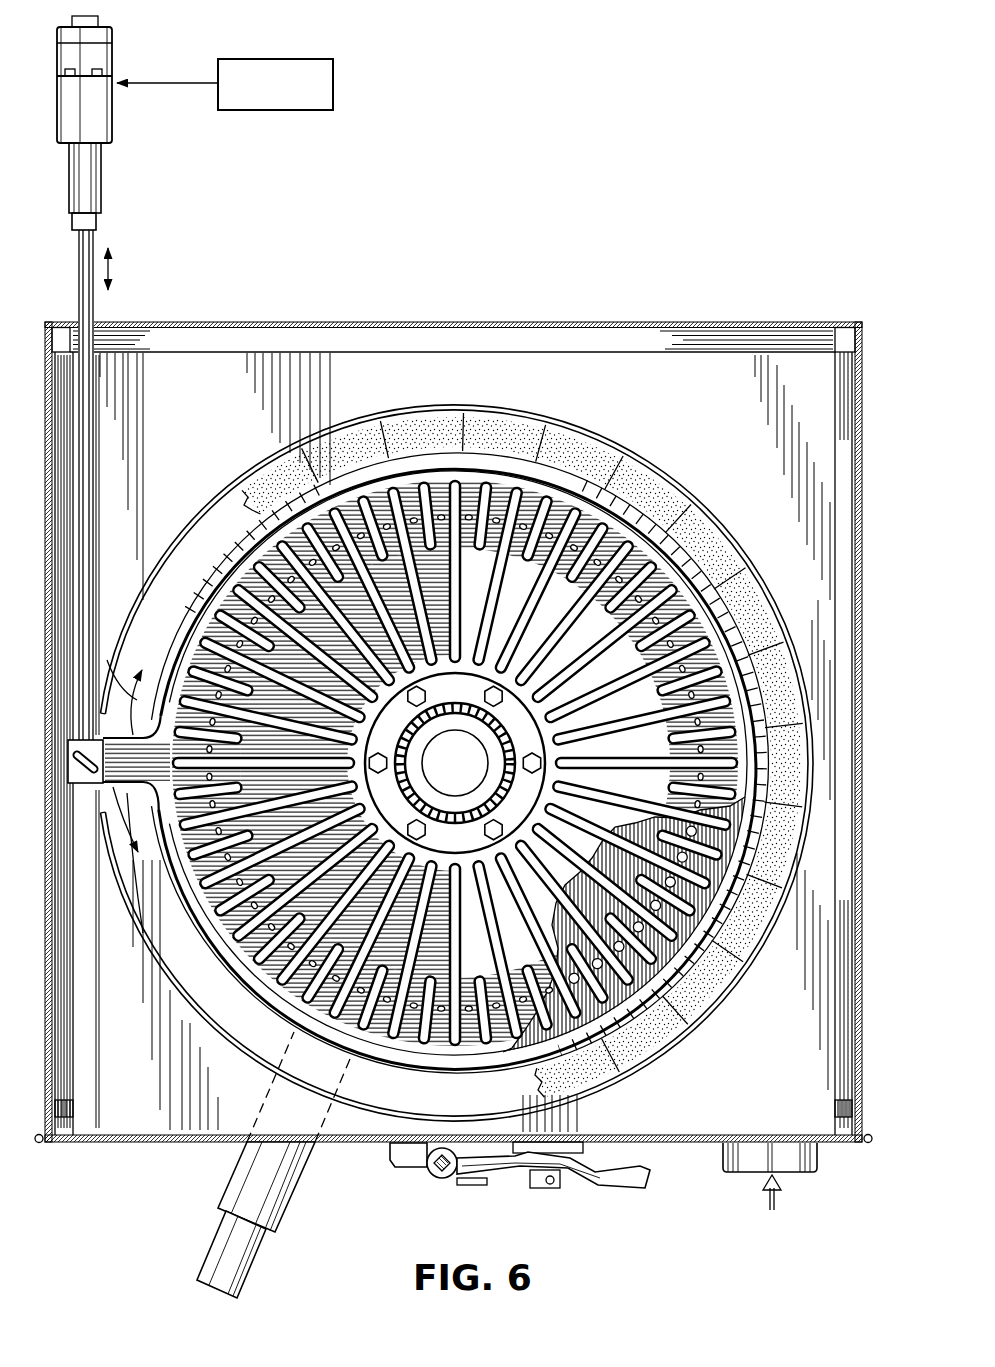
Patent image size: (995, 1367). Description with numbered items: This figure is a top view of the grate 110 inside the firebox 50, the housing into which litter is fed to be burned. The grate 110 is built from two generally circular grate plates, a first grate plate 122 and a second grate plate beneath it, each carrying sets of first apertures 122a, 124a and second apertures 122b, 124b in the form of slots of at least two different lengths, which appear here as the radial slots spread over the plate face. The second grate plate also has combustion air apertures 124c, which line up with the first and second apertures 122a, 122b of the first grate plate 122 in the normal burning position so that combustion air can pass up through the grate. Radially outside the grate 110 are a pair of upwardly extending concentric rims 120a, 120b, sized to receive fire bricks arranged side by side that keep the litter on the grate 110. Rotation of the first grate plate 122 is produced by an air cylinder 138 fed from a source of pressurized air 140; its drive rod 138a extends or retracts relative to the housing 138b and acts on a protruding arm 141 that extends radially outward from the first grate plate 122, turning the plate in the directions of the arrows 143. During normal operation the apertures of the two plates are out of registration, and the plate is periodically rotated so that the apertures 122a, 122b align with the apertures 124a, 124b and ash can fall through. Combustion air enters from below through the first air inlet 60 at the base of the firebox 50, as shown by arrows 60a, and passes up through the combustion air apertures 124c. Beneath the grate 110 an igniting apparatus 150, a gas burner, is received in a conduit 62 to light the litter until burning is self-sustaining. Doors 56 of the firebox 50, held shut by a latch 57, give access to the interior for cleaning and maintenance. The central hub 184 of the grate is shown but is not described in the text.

The firebox 50 is at (728, 316).
The doors 56 is at (125, 1145).
The latch 57 is at (600, 1185).
The first air inlet 60 is at (787, 1172).
The combustion air arrows 60a is at (770, 1198).
The conduit 62 is at (297, 1205).
The grate 110 is at (557, 507).
The first rim 120a is at (648, 458).
The second rim 120b is at (707, 524).
The first grate plate 122 is at (470, 1030).
The first apertures of first grate plate 122a is at (338, 983).
The second apertures of first grate plate 122b is at (216, 915).
The first apertures of second grate plate 124a is at (708, 1000).
The second apertures of second grate plate 124b is at (660, 1050).
The combustion air apertures 124c is at (228, 566).
The air cylinder 138 is at (116, 57).
The drive rod 138a is at (94, 443).
The housing 138b is at (101, 193).
The source of pressurized air 140 is at (333, 83).
The protruding arm 141 is at (115, 768).
The rotation arrows 143 is at (133, 700).
The igniting apparatus 150 is at (215, 1222).
The hub 184 is at (428, 720).